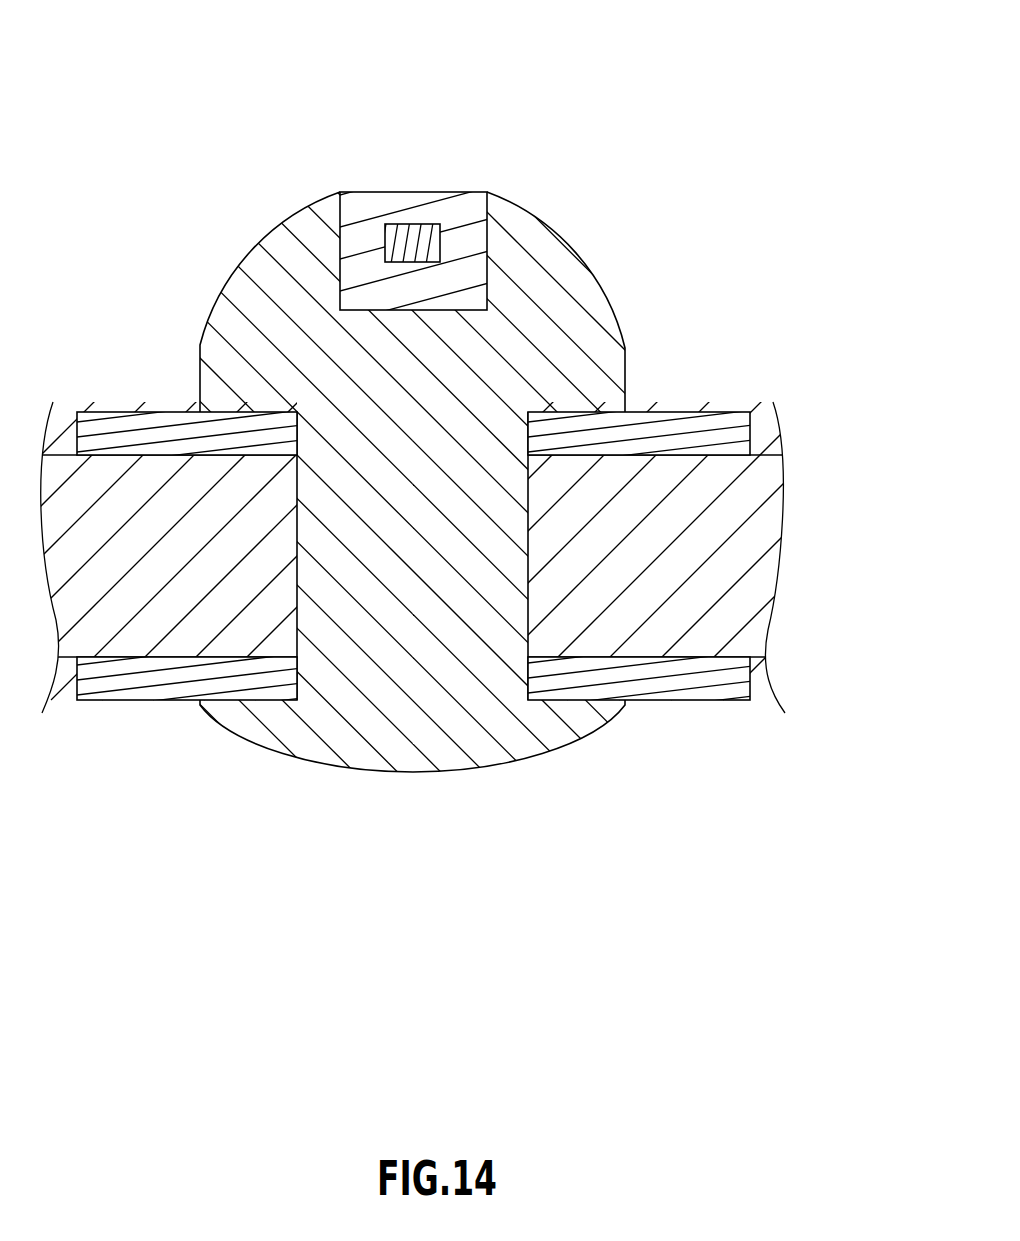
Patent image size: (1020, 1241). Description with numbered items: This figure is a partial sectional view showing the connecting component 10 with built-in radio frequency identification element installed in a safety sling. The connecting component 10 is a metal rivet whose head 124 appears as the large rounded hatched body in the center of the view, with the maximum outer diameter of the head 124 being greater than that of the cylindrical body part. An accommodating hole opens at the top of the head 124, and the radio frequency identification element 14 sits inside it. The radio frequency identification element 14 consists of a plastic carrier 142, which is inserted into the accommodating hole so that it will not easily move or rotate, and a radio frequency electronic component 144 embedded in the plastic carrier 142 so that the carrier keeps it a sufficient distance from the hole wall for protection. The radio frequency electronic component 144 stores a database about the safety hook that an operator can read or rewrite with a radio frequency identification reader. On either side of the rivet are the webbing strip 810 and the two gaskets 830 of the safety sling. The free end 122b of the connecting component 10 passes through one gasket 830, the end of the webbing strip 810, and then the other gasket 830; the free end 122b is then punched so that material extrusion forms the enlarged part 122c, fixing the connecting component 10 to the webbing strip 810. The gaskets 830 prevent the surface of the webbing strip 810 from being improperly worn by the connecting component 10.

The connecting component with built-in radio frequency identification element 10 is at (481, 620).
The radio frequency identification element 14 is at (519, 205).
The head 124 is at (557, 300).
The free end 122b is at (339, 682).
The enlarged part 122c is at (478, 700).
The plastic carrier 142 is at (473, 269).
The radio frequency electronic component 144 is at (423, 238).
The webbing strip 810 is at (740, 540).
The gasket 830 is at (123, 430).